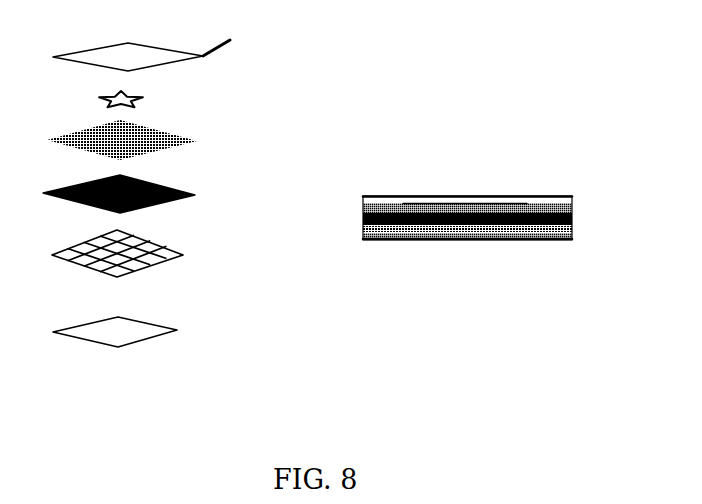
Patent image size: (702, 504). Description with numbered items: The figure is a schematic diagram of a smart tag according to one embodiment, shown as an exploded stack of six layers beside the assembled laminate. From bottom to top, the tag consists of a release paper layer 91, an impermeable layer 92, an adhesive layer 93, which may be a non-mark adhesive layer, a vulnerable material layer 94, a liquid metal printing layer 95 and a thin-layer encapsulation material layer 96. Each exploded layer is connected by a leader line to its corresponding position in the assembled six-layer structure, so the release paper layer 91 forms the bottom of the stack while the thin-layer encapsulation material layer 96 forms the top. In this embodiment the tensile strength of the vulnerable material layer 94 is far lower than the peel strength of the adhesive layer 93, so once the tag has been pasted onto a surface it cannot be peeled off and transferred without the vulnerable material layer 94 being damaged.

The release paper layer 91 is at (382, 245).
The impermeable layer 92 is at (362, 230).
The adhesive layer 93 is at (362, 222).
The vulnerable material layer 94 is at (360, 208).
The liquid metal printing layer 95 is at (408, 203).
The thin-layer encapsulation material layer 96 is at (415, 192).